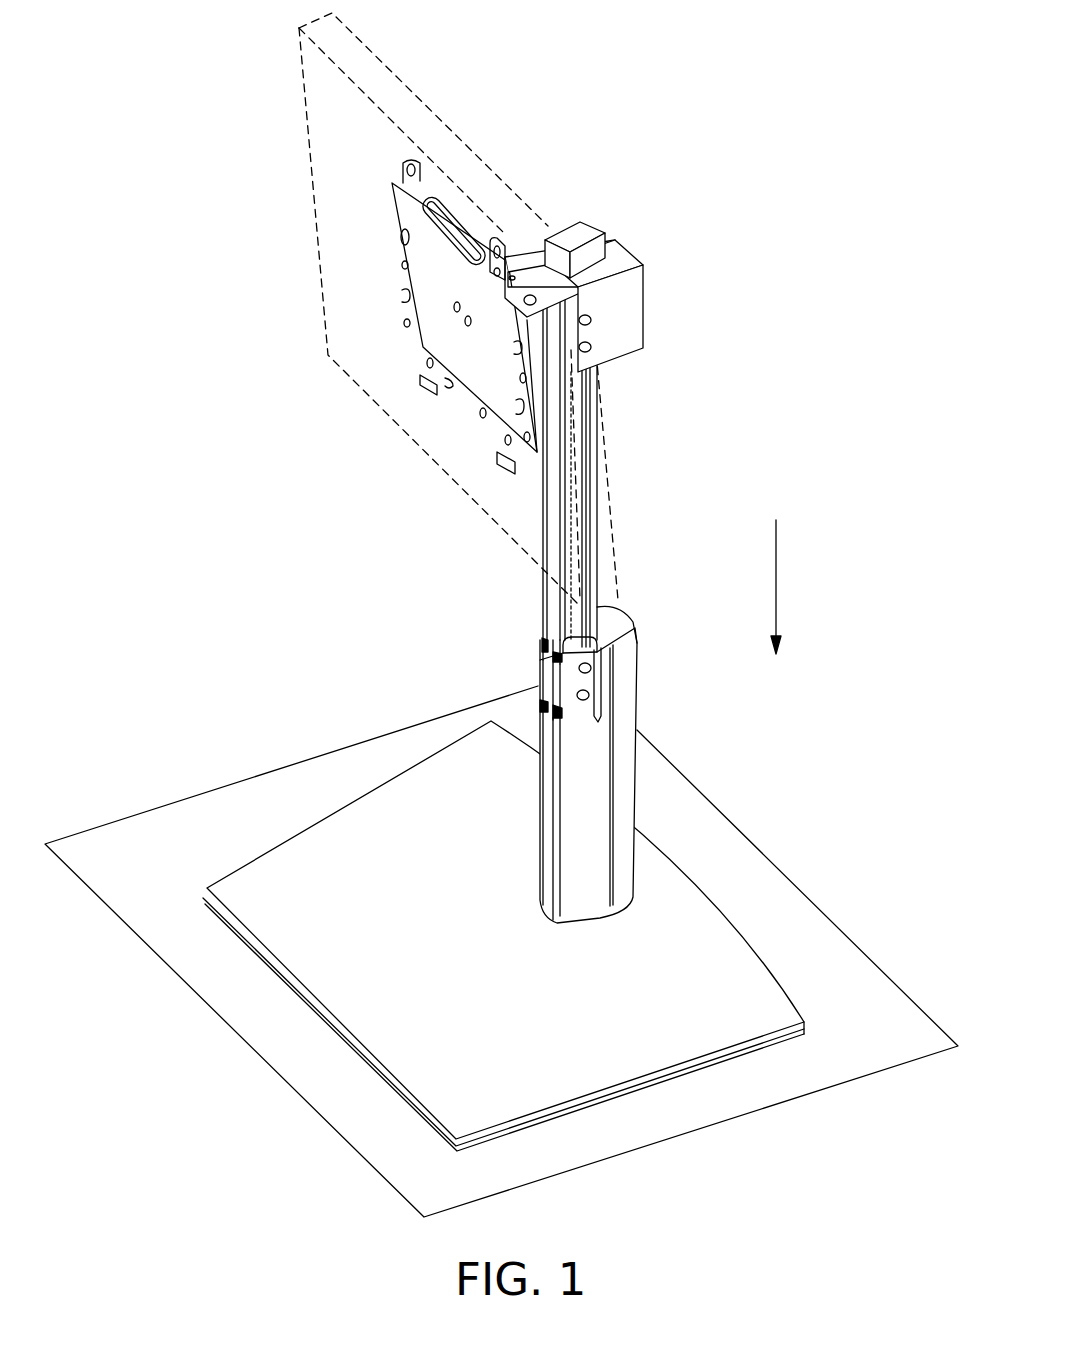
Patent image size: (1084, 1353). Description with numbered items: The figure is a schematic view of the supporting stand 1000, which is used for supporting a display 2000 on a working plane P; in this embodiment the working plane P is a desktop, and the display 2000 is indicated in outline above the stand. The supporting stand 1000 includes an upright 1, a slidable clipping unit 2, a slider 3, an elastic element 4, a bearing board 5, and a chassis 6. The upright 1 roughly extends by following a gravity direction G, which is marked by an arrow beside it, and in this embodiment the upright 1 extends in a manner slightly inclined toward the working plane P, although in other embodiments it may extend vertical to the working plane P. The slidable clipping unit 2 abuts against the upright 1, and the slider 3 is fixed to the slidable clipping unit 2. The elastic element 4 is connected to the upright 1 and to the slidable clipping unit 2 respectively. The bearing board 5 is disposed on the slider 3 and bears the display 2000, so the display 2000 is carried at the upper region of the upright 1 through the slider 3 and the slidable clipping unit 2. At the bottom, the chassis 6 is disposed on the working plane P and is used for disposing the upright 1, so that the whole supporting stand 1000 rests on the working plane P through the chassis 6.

The supporting stand 1000 is at (527, 612).
The display 2000 is at (318, 236).
The upright 1 is at (520, 665).
The slidable clipping unit 2 is at (556, 382).
The slider 3 is at (520, 238).
The elastic element 4 is at (668, 295).
The bearing board 5 is at (498, 210).
The chassis 6 is at (303, 842).
The working plane P is at (826, 929).
The gravity direction G is at (776, 610).